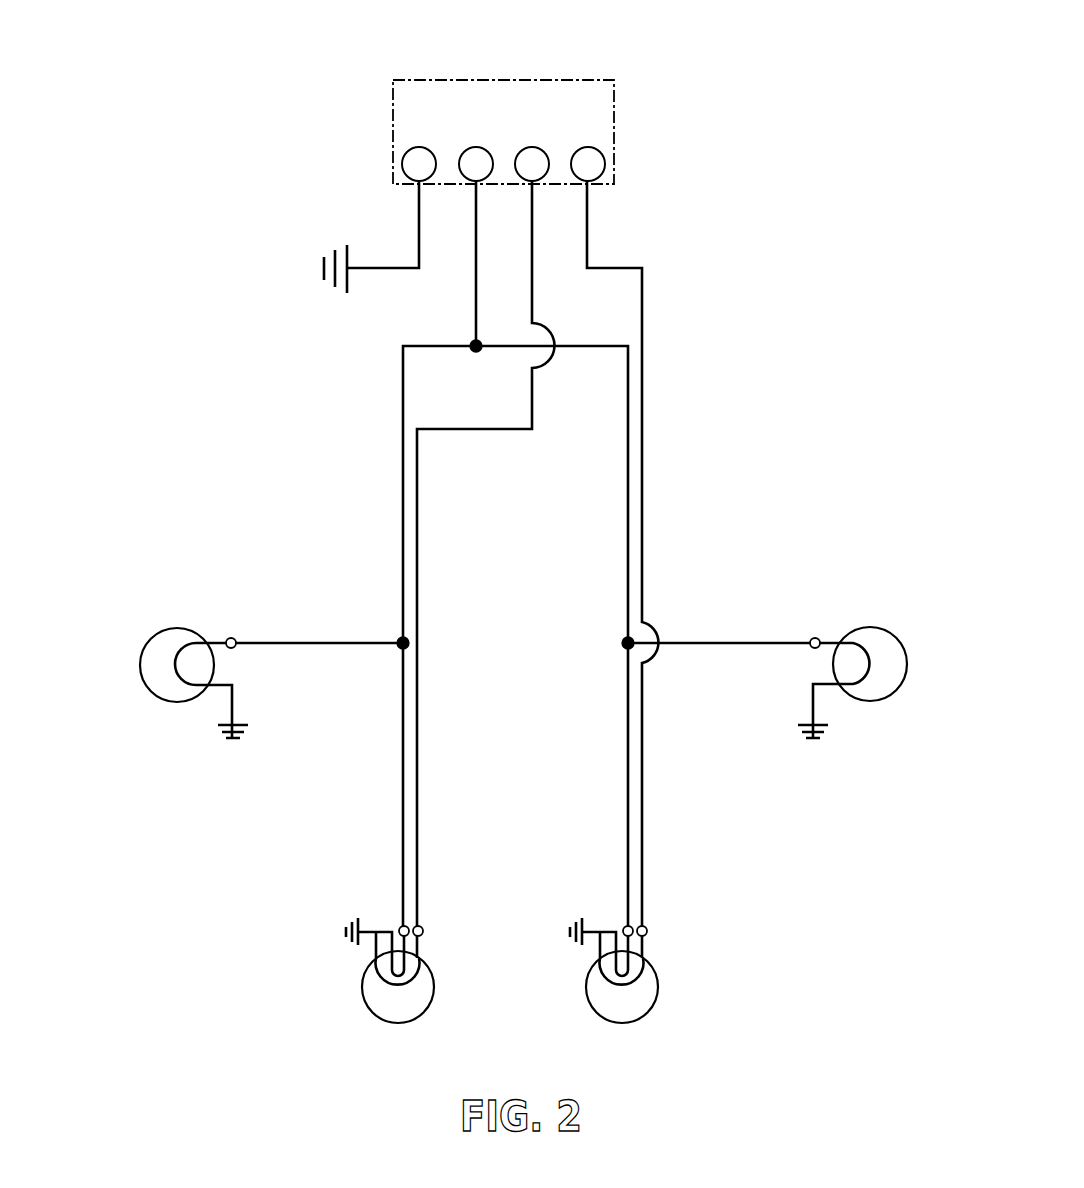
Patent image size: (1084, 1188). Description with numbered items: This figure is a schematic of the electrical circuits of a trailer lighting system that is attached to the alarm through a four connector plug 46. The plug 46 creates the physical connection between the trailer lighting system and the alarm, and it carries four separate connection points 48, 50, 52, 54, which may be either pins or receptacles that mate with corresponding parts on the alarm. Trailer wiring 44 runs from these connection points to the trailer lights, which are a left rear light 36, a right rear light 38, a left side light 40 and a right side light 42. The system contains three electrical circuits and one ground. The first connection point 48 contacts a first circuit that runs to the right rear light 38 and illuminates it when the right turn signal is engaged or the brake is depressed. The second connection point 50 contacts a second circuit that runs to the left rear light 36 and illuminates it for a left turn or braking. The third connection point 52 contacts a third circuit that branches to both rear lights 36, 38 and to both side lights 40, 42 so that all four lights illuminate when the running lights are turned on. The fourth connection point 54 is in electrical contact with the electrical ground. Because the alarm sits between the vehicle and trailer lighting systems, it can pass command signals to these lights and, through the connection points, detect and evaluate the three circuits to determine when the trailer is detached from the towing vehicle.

The left rear light 36 is at (387, 999).
The right rear light 38 is at (648, 987).
The left side light 40 is at (152, 668).
The right side light 42 is at (897, 655).
The trailer wiring 44 is at (628, 381).
The four connector plug 46 is at (602, 88).
The first connection point 48 is at (605, 153).
The second connection point 50 is at (535, 147).
The third connection point 52 is at (468, 148).
The fourth connection point 54 is at (402, 162).